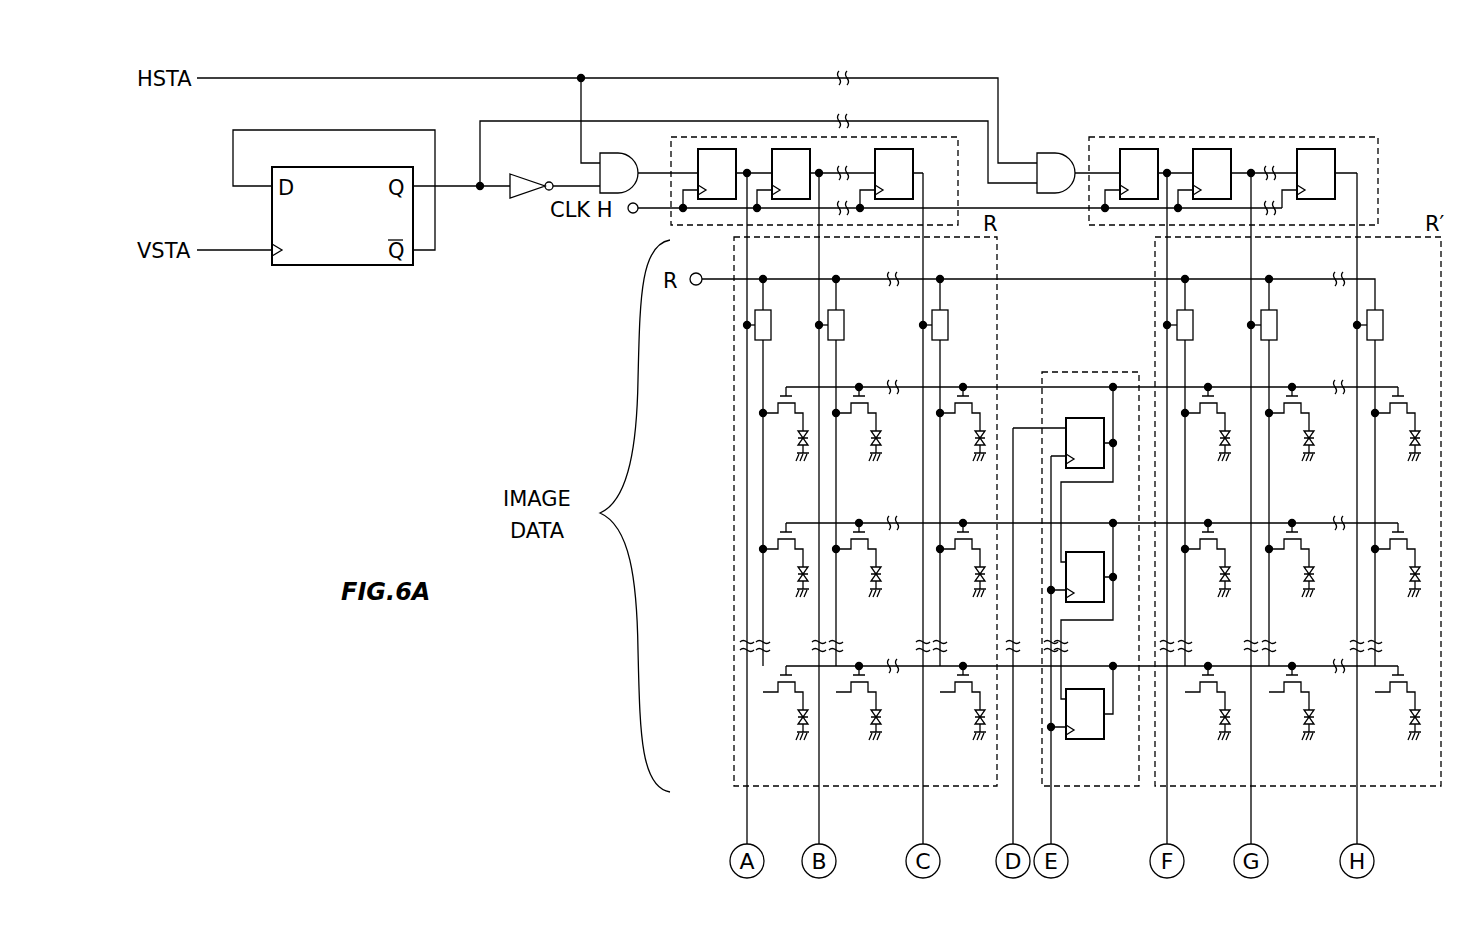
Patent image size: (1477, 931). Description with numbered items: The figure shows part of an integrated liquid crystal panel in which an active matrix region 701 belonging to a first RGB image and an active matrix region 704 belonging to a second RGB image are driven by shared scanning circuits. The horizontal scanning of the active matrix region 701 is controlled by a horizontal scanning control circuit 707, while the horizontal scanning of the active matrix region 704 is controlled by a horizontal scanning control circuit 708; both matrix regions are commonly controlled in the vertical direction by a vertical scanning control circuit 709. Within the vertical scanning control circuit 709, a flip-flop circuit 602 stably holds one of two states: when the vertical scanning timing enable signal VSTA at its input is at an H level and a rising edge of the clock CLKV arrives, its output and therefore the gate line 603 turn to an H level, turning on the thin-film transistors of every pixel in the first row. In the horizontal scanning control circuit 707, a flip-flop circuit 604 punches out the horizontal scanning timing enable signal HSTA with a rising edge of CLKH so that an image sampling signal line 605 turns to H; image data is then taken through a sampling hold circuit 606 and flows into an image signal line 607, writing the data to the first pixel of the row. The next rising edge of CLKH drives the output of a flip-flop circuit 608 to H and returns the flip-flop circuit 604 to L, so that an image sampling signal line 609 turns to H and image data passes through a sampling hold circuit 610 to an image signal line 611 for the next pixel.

The flip-flop circuit 604 is at (712, 151).
The flip-flop circuit 608 is at (783, 151).
The horizontal scanning control circuit 707 is at (814, 158).
The horizontal scanning control circuit 708 is at (1233, 167).
The image sampling signal line 605 is at (707, 508).
The image sampling signal line 609 is at (785, 508).
The sampling hold circuit 606 is at (724, 337).
The sampling hold circuit 610 is at (863, 319).
The image signal line 607 is at (720, 472).
The image signal line 611 is at (873, 472).
The gate line 603 is at (1092, 365).
The flip-flop circuit 602 is at (1105, 404).
The active matrix region 701 is at (986, 272).
The active matrix region 704 is at (1431, 272).
The vertical scanning control circuit 709 is at (1104, 777).